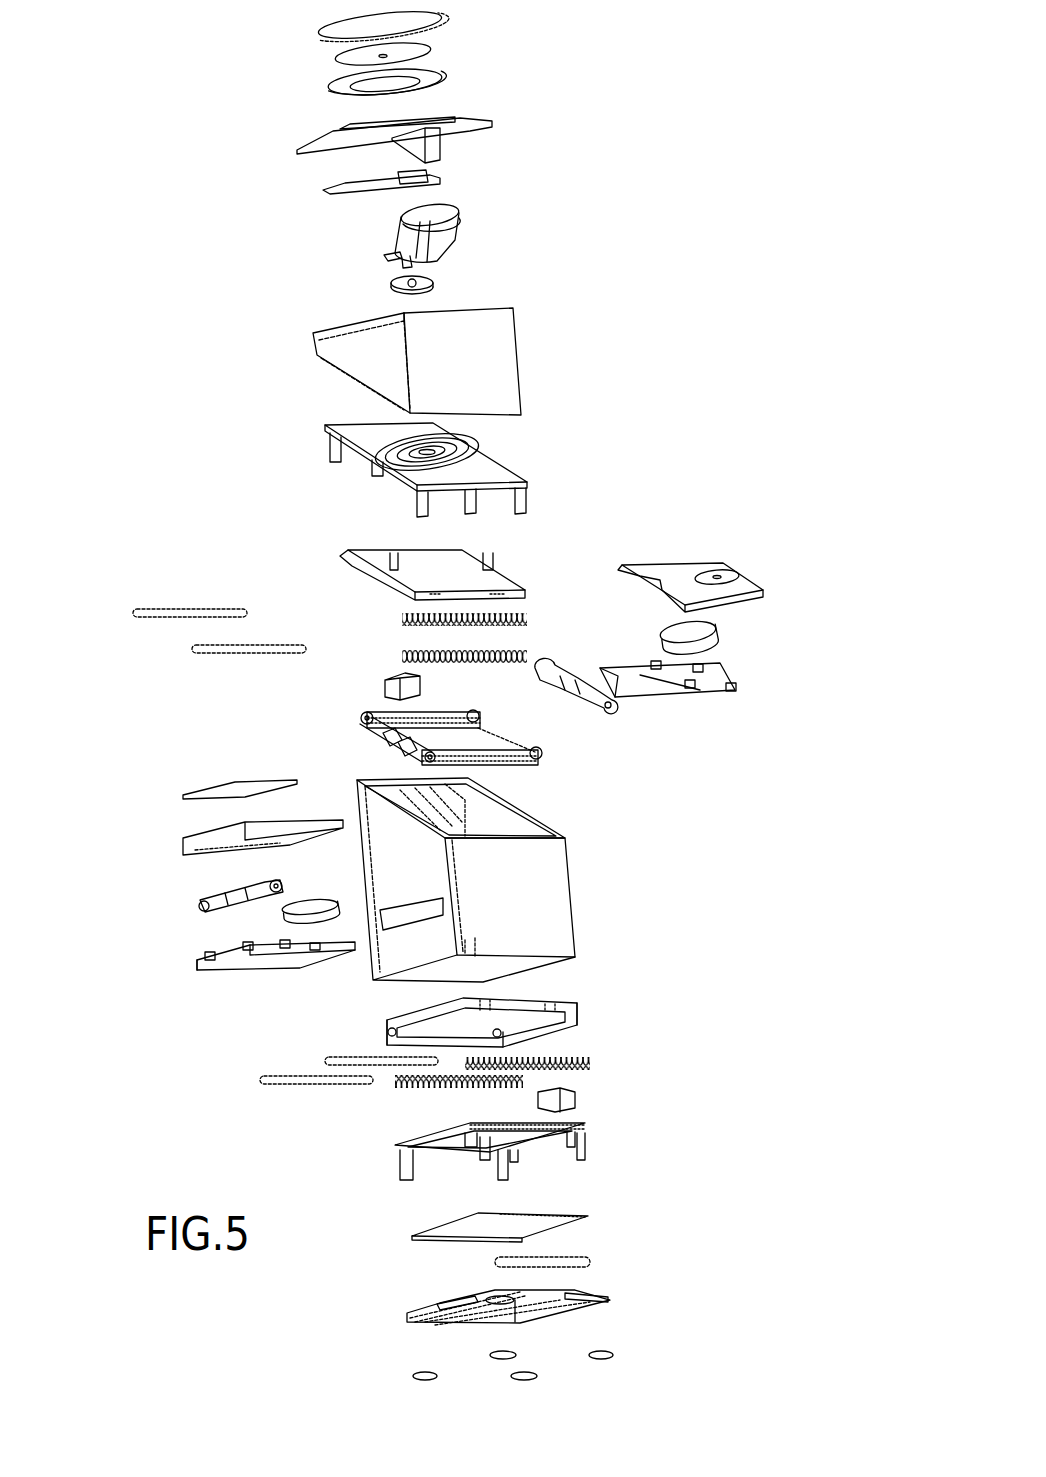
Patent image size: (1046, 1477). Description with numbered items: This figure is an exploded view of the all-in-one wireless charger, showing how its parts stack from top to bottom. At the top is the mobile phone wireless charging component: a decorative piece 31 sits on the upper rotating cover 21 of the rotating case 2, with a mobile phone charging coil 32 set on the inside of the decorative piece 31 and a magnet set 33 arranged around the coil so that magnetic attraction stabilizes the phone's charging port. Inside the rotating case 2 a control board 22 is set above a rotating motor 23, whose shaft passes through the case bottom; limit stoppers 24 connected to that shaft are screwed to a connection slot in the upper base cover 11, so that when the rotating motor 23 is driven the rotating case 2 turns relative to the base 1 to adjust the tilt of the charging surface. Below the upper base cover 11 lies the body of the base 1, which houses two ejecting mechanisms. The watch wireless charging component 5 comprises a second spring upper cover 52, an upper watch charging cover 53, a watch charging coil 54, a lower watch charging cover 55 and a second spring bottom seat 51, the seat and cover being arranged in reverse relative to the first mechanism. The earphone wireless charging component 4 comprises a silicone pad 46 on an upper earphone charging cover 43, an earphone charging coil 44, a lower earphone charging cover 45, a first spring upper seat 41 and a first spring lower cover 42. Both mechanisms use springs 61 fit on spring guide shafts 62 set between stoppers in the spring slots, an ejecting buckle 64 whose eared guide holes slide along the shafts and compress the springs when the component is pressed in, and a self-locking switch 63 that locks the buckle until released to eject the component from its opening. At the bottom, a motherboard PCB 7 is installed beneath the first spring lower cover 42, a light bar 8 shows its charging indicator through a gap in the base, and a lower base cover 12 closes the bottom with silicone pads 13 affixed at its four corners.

The base 1 is at (555, 860).
The rotating case 2 is at (490, 353).
The earphone wireless charging component 4 is at (100, 829).
The watch wireless charging component 5 is at (838, 522).
The motherboard PCB 7 is at (545, 1226).
The light bar 8 is at (590, 1263).
The upper base cover 11 is at (490, 472).
The lower base cover 12 is at (542, 1310).
The silicone pad 13 is at (537, 1376).
The upper rotating cover 21 is at (463, 143).
The control board 22 is at (440, 180).
The rotating motor 23 is at (440, 222).
The limit stopper 24 is at (432, 283).
The decorative piece 31 is at (443, 20).
The mobile phone charging coil 32 is at (432, 52).
The magnet set 33 is at (445, 80).
The first spring upper seat 41 is at (390, 1032).
The first spring lower cover 42 is at (395, 1143).
The upper earphone charging cover 43 is at (198, 842).
The earphone charging coil 44 is at (273, 913).
The lower earphone charging cover 45 is at (255, 958).
The silicone pad 46 is at (240, 792).
The second spring bottom seat 51 is at (530, 755).
The second spring upper cover 52 is at (465, 550).
The upper watch charging cover 53 is at (748, 585).
The watch charging coil 54 is at (720, 640).
The lower watch charging cover 55 is at (702, 680).
The springs 61 is at (400, 653).
The spring guide shafts 62 is at (250, 650).
The self-locking switch 63 is at (383, 686).
The ejecting buckle 64 is at (563, 676).